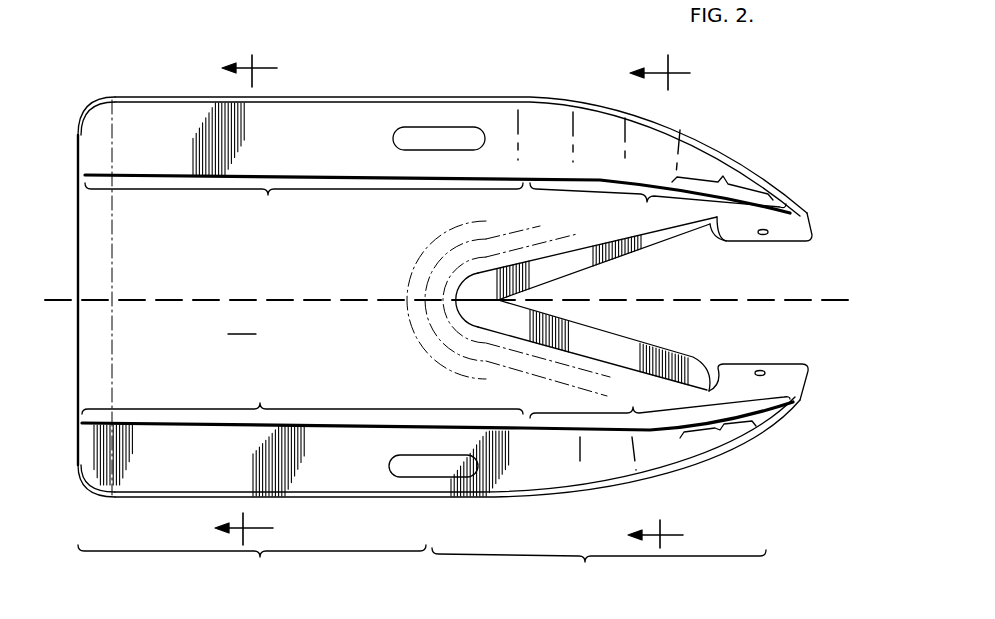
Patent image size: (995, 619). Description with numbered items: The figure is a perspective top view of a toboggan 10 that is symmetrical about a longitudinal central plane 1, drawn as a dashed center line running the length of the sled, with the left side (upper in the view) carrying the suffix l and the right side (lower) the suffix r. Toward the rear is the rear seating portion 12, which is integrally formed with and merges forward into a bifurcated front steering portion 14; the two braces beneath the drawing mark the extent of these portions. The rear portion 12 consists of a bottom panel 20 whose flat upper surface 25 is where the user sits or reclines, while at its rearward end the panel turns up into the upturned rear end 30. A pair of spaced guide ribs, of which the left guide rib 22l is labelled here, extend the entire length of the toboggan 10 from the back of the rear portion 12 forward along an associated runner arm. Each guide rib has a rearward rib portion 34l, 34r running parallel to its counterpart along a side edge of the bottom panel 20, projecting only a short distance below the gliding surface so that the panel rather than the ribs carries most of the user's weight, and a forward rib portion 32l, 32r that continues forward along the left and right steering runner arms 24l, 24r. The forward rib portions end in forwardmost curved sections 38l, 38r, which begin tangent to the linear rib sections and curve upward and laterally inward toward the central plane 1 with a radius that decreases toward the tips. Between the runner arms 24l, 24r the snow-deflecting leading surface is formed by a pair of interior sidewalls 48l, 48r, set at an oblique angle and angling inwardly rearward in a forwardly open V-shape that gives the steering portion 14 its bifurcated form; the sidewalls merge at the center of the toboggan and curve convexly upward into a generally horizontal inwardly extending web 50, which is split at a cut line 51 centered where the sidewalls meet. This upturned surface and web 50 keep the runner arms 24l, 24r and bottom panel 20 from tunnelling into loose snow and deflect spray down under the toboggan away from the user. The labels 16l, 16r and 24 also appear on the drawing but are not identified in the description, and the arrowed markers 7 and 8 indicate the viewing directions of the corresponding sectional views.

The toboggan 10 is at (836, 226).
The rear seating portion 12 is at (252, 569).
The front steering portion 14 is at (599, 571).
The left side flange 16l is at (360, 112).
The right side flange 16r is at (356, 472).
The bottom panel 20 is at (242, 323).
The guide rib 22l is at (273, 173).
The right fold line 24 is at (188, 430).
The steering runner arm 24l is at (784, 178).
The steering runner arm 24r is at (778, 437).
The upper surface 25 is at (102, 213).
The rear end 30 is at (78, 352).
The forward rib portion 32l is at (632, 241).
The forward rib portion 32r is at (634, 359).
The rearward rib portion 34l is at (304, 205).
The rearward rib portion 34r is at (302, 394).
The curved section 38l is at (723, 177).
The curved section 38r is at (720, 431).
The interior sidewall 48l is at (530, 252).
The interior sidewall 48r is at (500, 338).
The web 50 is at (676, 240).
The cut line 51 is at (467, 273).
The longitudinal central plane 1 is at (452, 299).
The section line 7- 7 is at (246, 296).
The section line 8- 8 is at (660, 298).